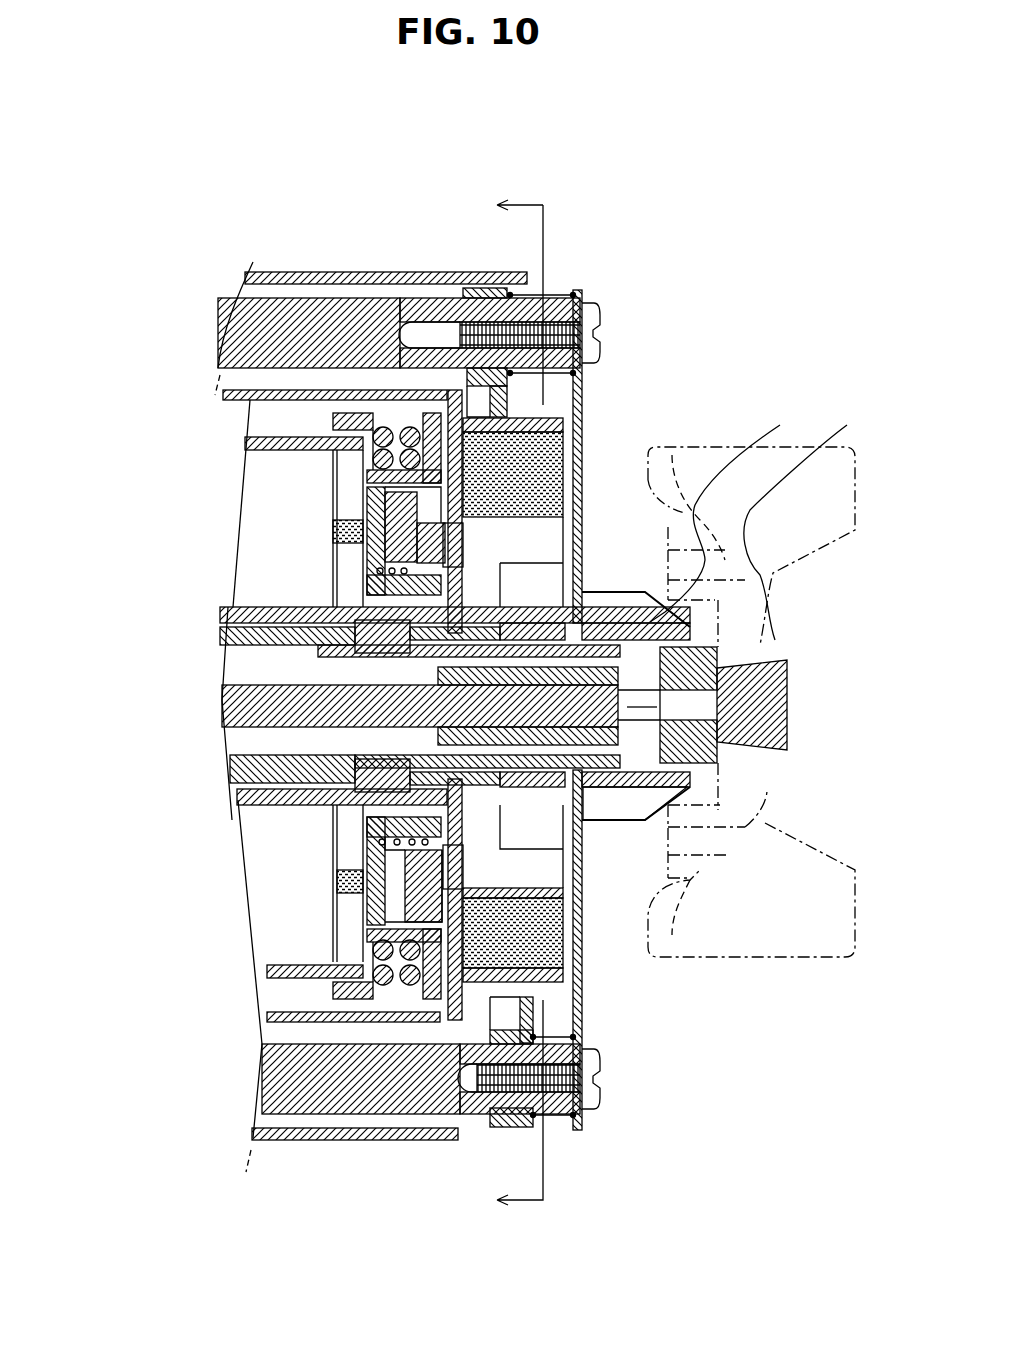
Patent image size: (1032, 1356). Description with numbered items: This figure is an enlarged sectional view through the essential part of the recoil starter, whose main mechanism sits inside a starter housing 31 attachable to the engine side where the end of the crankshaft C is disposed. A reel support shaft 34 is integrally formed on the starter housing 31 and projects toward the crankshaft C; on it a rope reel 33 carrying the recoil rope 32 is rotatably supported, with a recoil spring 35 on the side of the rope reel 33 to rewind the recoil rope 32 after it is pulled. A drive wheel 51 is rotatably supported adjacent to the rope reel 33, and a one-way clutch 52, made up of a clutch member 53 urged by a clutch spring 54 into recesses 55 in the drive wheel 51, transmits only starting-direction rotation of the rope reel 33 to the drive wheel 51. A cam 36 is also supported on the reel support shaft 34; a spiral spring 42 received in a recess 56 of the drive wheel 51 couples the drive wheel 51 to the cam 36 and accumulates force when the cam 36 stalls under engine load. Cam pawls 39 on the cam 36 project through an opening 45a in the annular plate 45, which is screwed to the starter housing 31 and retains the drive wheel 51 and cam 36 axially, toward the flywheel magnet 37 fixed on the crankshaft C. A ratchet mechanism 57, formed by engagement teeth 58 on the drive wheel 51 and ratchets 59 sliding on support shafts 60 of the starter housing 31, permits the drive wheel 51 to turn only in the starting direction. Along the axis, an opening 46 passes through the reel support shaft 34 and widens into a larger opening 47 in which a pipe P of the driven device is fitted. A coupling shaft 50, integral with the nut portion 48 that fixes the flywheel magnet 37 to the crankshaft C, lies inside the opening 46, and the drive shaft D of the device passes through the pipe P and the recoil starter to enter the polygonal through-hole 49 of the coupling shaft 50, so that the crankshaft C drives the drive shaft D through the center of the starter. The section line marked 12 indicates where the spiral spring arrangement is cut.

The starter housing 31 is at (298, 272).
The recoil rope 32 is at (383, 425).
The rope reel 33 is at (425, 415).
The section line of FIG. 12 is at (511, 704).
The annular plate 45 is at (577, 292).
The opening 45a is at (584, 480).
The recess 56 is at (582, 533).
The cam pawls 39 is at (727, 508).
The cam 36 is at (761, 521).
The recoil spring 35 is at (333, 497).
The reel support shaft 34 is at (283, 607).
The pipe P is at (218, 620).
The crankshaft C is at (790, 690).
The opening 46 is at (320, 668).
The drive shaft D is at (232, 700).
The through-hole 49 is at (775, 708).
The nut portion 48 is at (775, 750).
The opening 47 is at (235, 763).
The clutch spring 54 is at (398, 898).
The coupling shaft 50 is at (590, 818).
The one-way clutch 52 is at (388, 884).
The recesses 55 is at (565, 908).
The clutch member 53 is at (400, 900).
The drive wheel 51 is at (582, 1012).
The flywheel magnet 37 is at (827, 957).
The engagement teeth 58 is at (582, 1017).
The spiral spring 42 is at (393, 1137).
The support shaft 60 is at (433, 1140).
The ratchets 59 is at (507, 1123).
The ratchet mechanism 57 is at (582, 1138).